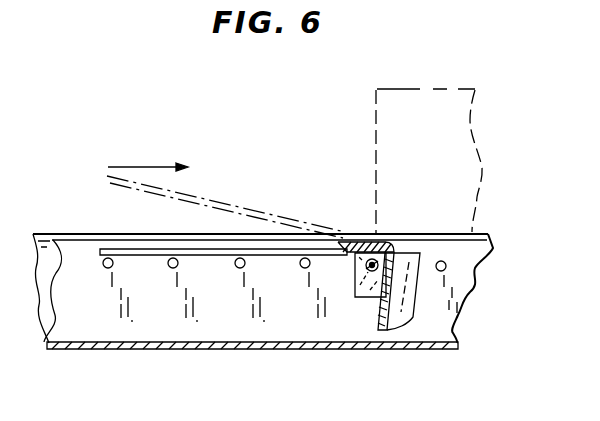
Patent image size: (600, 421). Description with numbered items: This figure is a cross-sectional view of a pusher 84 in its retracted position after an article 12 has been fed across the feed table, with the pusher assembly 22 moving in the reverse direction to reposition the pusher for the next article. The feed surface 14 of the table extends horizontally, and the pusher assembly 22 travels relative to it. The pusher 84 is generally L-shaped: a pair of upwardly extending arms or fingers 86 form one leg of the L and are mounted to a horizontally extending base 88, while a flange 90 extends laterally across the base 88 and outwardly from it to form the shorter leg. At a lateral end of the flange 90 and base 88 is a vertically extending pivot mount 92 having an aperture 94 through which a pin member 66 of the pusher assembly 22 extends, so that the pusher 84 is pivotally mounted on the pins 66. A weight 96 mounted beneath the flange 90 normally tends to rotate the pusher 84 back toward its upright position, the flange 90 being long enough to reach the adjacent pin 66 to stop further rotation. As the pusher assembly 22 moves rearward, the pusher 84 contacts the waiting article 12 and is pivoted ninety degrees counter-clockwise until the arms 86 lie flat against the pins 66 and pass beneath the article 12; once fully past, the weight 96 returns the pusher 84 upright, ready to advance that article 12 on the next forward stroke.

The article 12 is at (417, 89).
The feed surface 14 is at (65, 233).
The pusher assembly 22 is at (110, 323).
The pin member 66 is at (236, 267).
The pusher 84 is at (249, 204).
The arm 86 is at (130, 249).
The base 88 is at (362, 247).
The flange 90 is at (388, 333).
The pivot mount 92 is at (350, 272).
The aperture 94 is at (383, 250).
The weight 96 is at (392, 300).